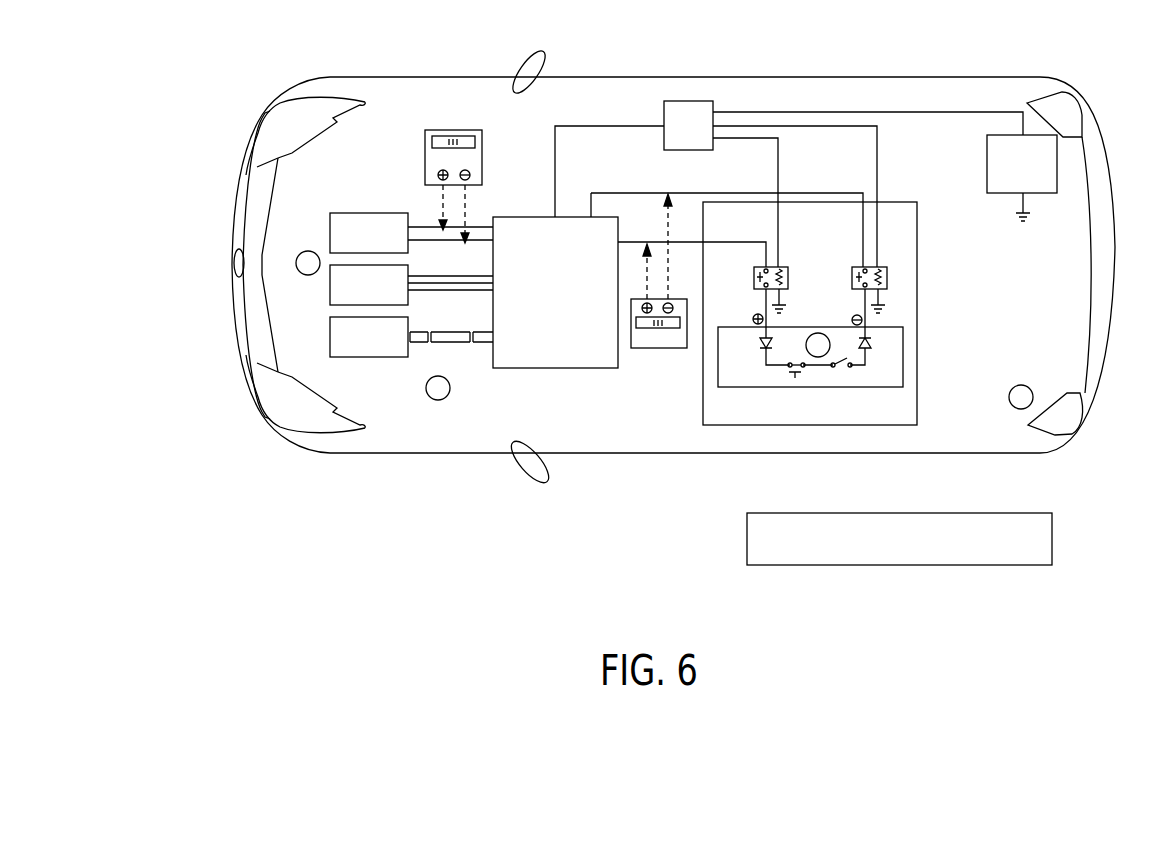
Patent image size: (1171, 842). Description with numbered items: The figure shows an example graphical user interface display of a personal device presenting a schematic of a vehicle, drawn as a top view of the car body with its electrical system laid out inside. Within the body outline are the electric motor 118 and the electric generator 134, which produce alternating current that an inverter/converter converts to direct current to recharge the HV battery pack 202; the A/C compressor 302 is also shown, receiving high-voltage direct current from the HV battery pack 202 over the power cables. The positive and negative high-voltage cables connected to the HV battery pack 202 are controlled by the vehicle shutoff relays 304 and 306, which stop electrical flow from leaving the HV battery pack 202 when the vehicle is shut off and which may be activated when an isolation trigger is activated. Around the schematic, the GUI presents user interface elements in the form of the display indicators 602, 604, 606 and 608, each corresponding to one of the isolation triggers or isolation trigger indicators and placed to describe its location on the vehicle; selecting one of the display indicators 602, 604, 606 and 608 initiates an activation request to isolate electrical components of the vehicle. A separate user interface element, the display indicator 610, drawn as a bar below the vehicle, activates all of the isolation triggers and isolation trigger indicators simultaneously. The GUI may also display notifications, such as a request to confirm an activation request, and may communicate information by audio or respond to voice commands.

The A/C compressor 302 is at (383, 245).
The electric generator 134 is at (383, 297).
The electric motor 118 is at (383, 349).
The vehicle shutoff relay 306 is at (790, 272).
The vehicle shutoff relay 304 is at (888, 276).
The HV battery pack 202 is at (833, 413).
The display indicator 602 is at (806, 345).
The display indicator 604 is at (1033, 393).
The display indicator 606 is at (296, 263).
The display indicator 608 is at (438, 400).
The display indicator 610 is at (924, 549).